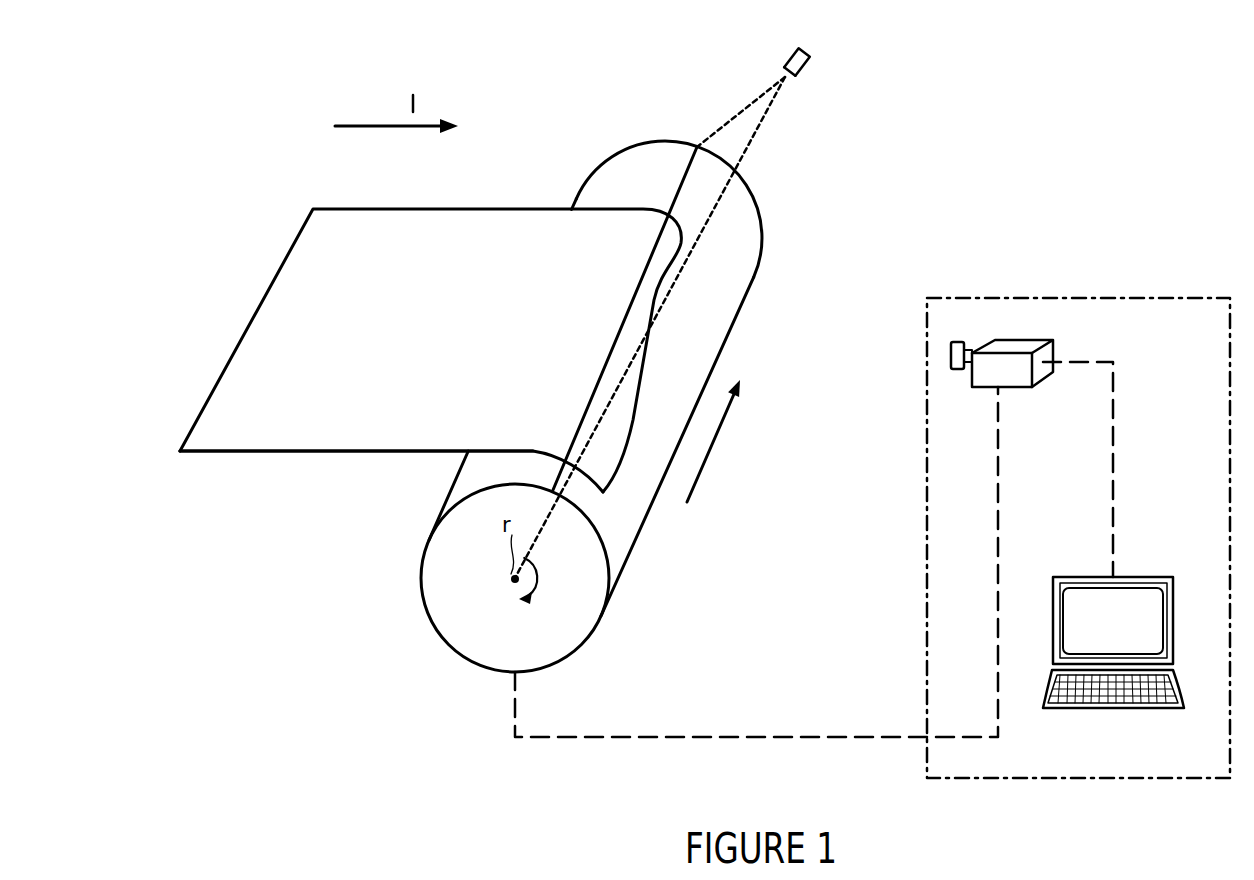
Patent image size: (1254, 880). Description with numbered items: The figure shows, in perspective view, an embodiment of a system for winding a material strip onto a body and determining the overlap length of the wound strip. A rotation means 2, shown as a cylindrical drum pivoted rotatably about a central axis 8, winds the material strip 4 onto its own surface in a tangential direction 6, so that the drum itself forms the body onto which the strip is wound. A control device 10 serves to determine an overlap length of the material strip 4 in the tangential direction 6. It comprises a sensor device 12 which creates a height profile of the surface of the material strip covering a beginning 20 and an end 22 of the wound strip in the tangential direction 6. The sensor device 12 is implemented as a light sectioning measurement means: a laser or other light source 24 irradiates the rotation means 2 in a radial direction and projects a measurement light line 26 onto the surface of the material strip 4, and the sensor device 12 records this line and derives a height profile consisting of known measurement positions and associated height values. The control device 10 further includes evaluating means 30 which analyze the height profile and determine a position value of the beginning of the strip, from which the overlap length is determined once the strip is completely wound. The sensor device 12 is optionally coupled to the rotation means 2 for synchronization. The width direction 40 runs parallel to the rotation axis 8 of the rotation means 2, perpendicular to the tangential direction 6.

The rotation means 2 is at (435, 631).
The material strip 4 is at (363, 452).
The tangential direction 6 is at (360, 125).
The central axis 8 is at (513, 584).
The control device 10 is at (1088, 298).
The sensor device 12 is at (1053, 340).
The beginning of the wound material strip 20 is at (697, 131).
The end of the wound material strip 22 is at (360, 188).
The light source 24 is at (810, 62).
The measurement light line 26 is at (683, 173).
The evaluating means 30 is at (1148, 577).
The width direction 40 is at (735, 452).